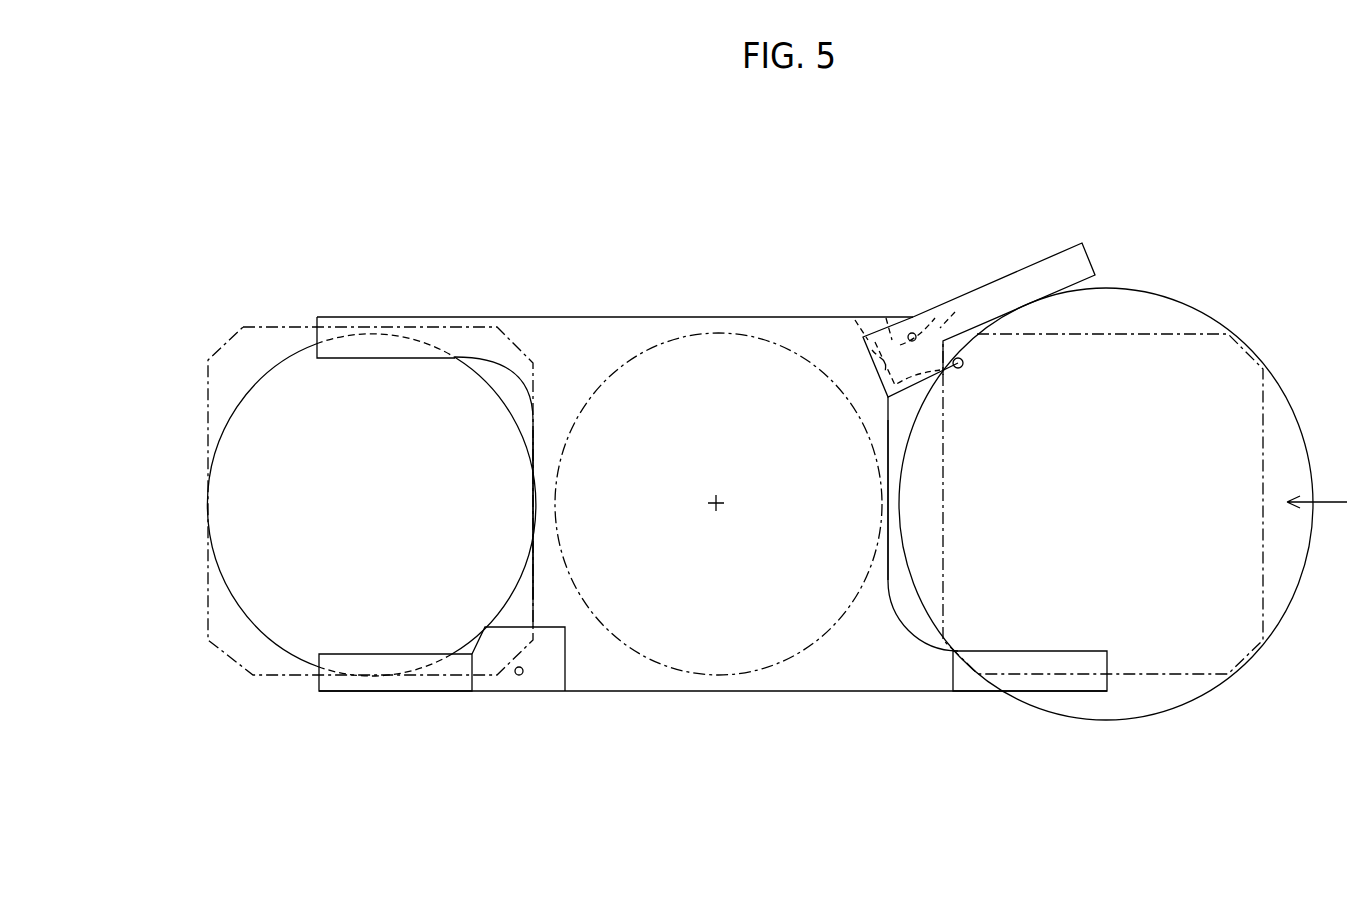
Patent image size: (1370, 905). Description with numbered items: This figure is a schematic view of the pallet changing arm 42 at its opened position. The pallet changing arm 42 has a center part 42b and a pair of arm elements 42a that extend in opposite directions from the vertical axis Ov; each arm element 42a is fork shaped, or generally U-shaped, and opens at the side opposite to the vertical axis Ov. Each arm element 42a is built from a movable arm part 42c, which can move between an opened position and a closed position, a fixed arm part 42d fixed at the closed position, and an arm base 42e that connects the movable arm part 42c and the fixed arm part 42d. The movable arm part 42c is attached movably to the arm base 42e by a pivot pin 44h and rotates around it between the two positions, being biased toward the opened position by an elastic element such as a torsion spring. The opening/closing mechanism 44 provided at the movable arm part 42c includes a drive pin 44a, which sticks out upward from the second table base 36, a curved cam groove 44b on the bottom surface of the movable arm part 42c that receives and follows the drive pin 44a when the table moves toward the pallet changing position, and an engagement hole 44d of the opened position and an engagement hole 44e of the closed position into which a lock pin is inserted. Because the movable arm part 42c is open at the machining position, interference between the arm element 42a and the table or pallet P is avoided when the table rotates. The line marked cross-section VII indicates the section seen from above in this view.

The second table base 36 is at (1290, 468).
The pallet changing arm 42 is at (248, 284).
The arm element 42a is at (428, 731).
The center part 42b is at (745, 682).
The movable arm part 42c is at (353, 678).
The fixed arm part 42d is at (343, 322).
The arm base 42e is at (557, 377).
The opening/closing mechanism 44 is at (927, 180).
The drive pin 44a is at (965, 365).
The cam groove 44b is at (955, 312).
The engagement hole of the opened position 44d is at (855, 320).
The engagement hole of the closed position 44e is at (886, 318).
The pivot pin 44h is at (918, 333).
The vertical axis Ov is at (716, 503).
The pallet P is at (213, 343).
The cross-section VII is at (842, 346).